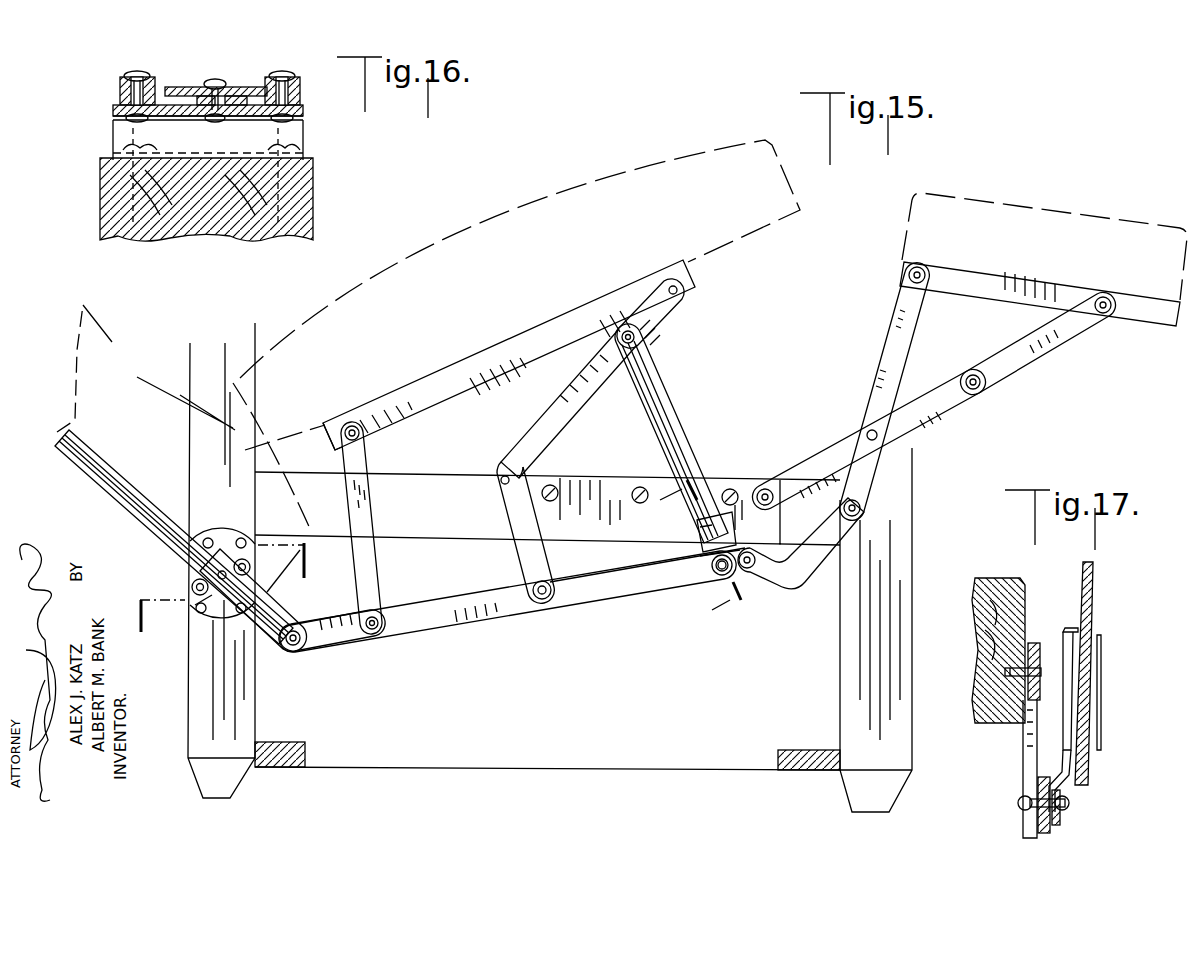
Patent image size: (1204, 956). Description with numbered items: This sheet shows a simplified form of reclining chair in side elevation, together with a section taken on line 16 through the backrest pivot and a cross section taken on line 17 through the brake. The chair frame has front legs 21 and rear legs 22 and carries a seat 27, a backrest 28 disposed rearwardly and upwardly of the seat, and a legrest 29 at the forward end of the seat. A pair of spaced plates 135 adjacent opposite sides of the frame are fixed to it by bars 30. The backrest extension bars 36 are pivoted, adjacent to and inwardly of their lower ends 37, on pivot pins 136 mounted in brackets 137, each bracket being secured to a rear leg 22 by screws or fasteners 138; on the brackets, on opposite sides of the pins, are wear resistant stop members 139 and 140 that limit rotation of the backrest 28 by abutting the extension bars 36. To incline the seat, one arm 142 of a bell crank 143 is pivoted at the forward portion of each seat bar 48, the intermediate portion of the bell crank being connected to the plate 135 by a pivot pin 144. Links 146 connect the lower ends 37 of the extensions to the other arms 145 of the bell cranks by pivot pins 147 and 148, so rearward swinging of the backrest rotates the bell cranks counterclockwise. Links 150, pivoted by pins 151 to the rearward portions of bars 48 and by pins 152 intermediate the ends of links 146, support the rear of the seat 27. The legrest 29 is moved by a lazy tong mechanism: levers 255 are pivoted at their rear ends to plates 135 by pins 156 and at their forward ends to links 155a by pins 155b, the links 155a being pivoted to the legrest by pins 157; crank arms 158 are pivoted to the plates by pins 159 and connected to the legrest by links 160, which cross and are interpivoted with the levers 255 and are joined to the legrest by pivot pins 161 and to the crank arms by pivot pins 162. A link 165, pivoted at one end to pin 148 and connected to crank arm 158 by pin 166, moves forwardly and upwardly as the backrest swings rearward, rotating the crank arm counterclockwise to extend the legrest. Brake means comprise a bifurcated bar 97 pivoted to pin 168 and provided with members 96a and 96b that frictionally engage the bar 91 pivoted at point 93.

In FIG. 15, the section line 16- 16 is at (232, 603).
In FIG. 15, the section line 17- 17 is at (698, 546).
In FIG. 15, the front leg 21 is at (845, 709).
In FIG. 16, the rear leg 22 is at (100, 196).
In FIG. 15, the rear leg 22 is at (190, 671).
In FIG. 17, the rear leg 22 is at (998, 650).
In FIG. 15, the seat 27 is at (553, 195).
In FIG. 15, the backrest 28 is at (112, 342).
In FIG. 15, the legrest 29 is at (1035, 216).
In FIG. 15, the bar 30 is at (420, 538).
In FIG. 16, the backrest extension bar 36 is at (175, 86).
In FIG. 15, the backrest extension bar 36 is at (122, 498).
In FIG. 15, the lower end of extension bar 37 is at (283, 620).
In FIG. 15, the bar 48 is at (503, 363).
In FIG. 15, the bar 91 is at (672, 405).
In FIG. 17, the bar 91 is at (1093, 597).
In FIG. 15, the pivot point 93 is at (636, 340).
In FIG. 15, the friction member 96a is at (716, 549).
In FIG. 15, the friction member 96b is at (712, 490).
In FIG. 17, the friction member 96b is at (1100, 678).
In FIG. 15, the bifurcated bar 97 is at (712, 573).
In FIG. 17, the bifurcated bar 97 is at (1060, 780).
In FIG. 15, the plate 135 is at (612, 492).
In FIG. 17, the plate 135 is at (1018, 722).
In FIG. 16, the pivot pin 136 is at (218, 80).
In FIG. 15, the pivot pin 136 is at (218, 575).
In FIG. 16, the bracket 137 is at (303, 110).
In FIG. 15, the bracket 137 is at (212, 595).
In FIG. 16, the screw or fastener 138 is at (110, 148).
In FIG. 16, the stop member 139 is at (296, 74).
In FIG. 16, the stop member 140 is at (118, 82).
In FIG. 15, the stop member 140 is at (236, 560).
In FIG. 15, the bell crank arm 142 is at (662, 312).
In FIG. 15, the bell crank 143 is at (550, 432).
In FIG. 15, the pivot pin 144 is at (502, 478).
In FIG. 15, the bell crank arm 145 is at (522, 555).
In FIG. 15, the link 146 is at (474, 614).
In FIG. 15, the pivot pin 147 is at (294, 646).
In FIG. 15, the pivot pin 148 is at (548, 598).
In FIG. 15, the link 150 is at (367, 470).
In FIG. 15, the pin 151 is at (351, 426).
In FIG. 15, the pin 152 is at (374, 630).
In FIG. 15, the link 155a is at (993, 368).
In FIG. 15, the pin 155b is at (980, 388).
In FIG. 15, the pin 156 is at (765, 488).
In FIG. 15, the pin 157 is at (1112, 322).
In FIG. 15, the crank arm 158 is at (790, 582).
In FIG. 17, the crank arm 158 is at (1030, 755).
In FIG. 15, the pin 159 is at (698, 528).
In FIG. 17, the pin 159 is at (1043, 665).
In FIG. 15, the link 160 is at (893, 348).
In FIG. 15, the pivot pin 161 is at (908, 278).
In FIG. 15, the pivot pin 162 is at (862, 512).
In FIG. 15, the link 165 is at (630, 585).
In FIG. 15, the pin 166 is at (750, 552).
In FIG. 17, the pin 166 is at (1020, 803).
In FIG. 15, the pin 168 is at (722, 576).
In FIG. 17, the pin 168 is at (1068, 803).
In FIG. 15, the lever 255 is at (937, 407).